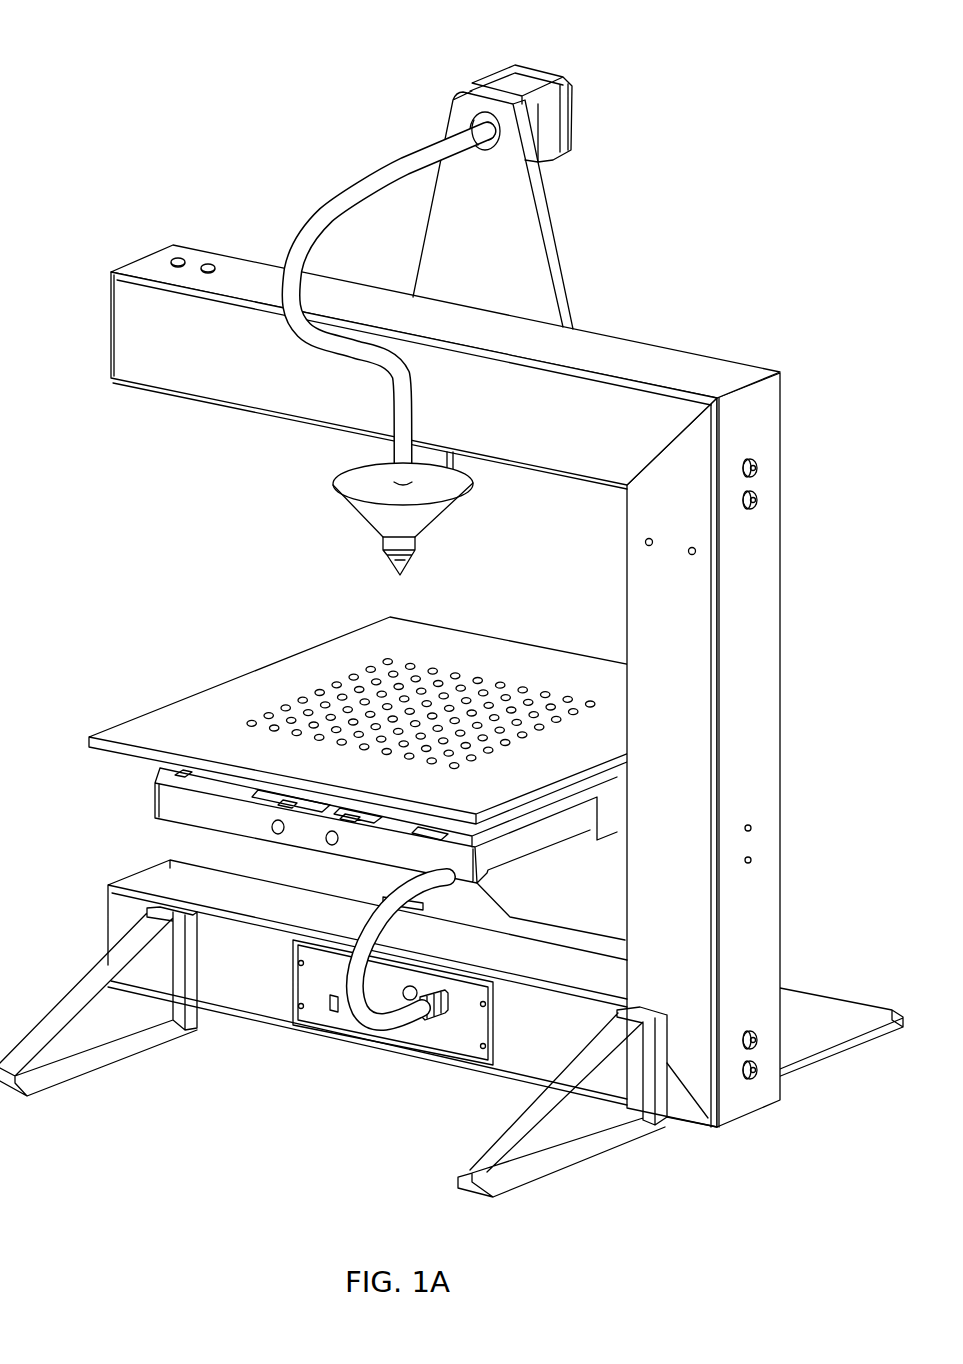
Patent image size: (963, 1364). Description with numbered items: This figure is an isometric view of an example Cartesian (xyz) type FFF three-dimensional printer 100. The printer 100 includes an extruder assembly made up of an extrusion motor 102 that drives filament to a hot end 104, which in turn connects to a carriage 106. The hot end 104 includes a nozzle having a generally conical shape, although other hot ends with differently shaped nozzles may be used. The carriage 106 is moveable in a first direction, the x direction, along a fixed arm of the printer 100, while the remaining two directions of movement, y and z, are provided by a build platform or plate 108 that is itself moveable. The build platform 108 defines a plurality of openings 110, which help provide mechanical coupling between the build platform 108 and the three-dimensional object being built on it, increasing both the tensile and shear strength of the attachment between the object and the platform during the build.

The 3D printer 100 is at (451, 604).
The extrusion motor 102 is at (570, 91).
The hot end 104 is at (451, 540).
The carriage 106 is at (472, 465).
The build platform 108 is at (433, 776).
The openings 110 is at (353, 677).